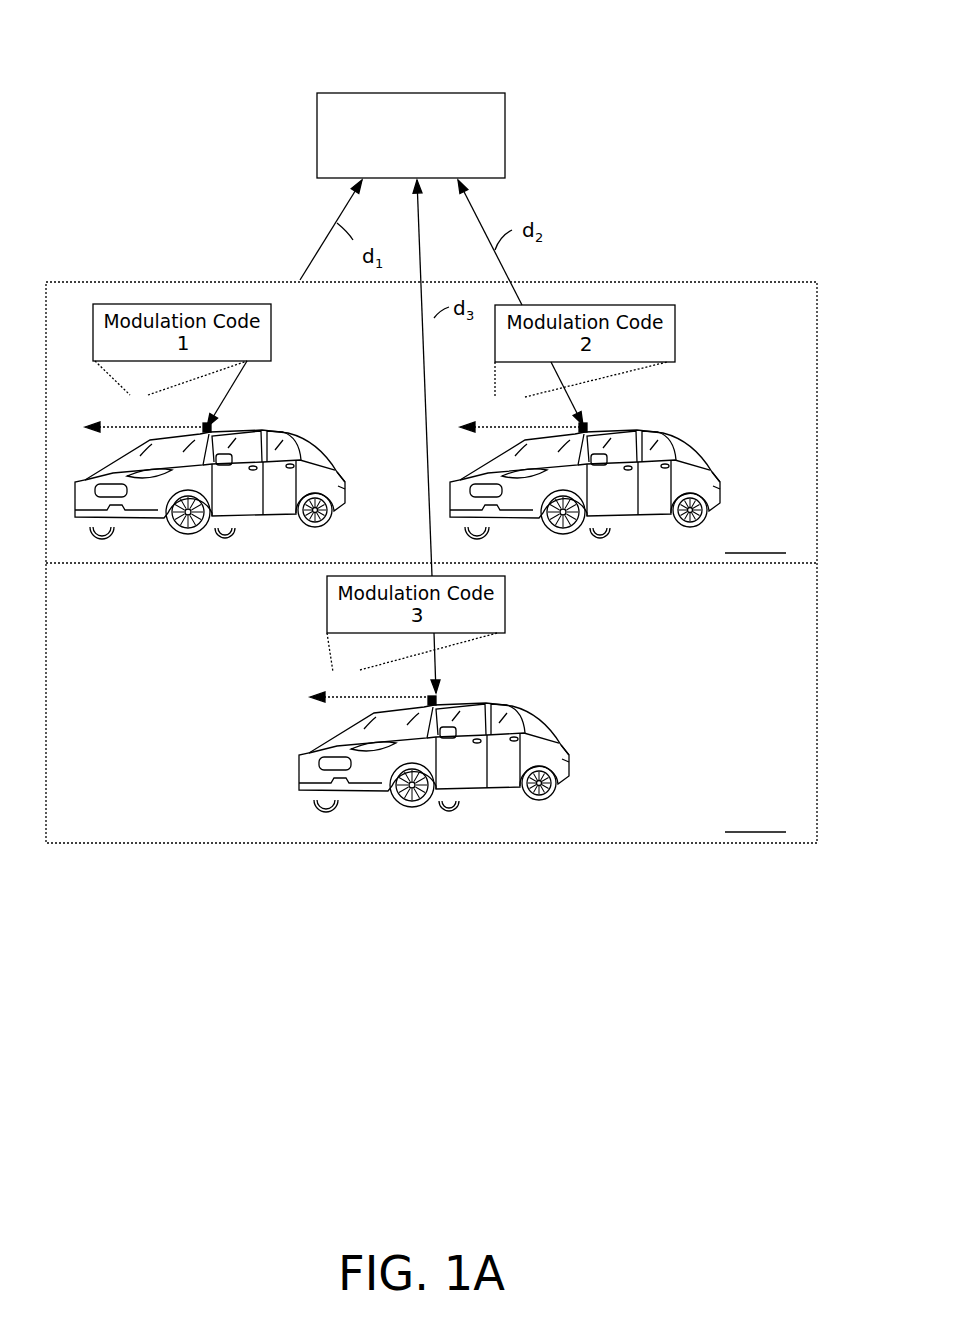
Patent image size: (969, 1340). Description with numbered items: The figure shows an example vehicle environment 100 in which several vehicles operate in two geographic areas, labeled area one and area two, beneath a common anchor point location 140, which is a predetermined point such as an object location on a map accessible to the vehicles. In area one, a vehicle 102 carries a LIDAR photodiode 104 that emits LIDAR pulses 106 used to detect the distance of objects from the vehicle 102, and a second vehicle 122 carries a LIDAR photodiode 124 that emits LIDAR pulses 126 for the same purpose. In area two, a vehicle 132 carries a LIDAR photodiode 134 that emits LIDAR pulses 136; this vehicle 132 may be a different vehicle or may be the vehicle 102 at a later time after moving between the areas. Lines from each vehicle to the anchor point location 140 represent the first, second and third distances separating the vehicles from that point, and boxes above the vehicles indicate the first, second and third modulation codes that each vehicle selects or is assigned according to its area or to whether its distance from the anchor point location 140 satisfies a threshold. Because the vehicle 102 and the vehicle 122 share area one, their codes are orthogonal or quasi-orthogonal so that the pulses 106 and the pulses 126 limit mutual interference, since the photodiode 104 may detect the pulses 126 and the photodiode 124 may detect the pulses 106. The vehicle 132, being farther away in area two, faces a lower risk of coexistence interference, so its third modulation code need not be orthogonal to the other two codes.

The vehicle environment 100 is at (803, 18).
The anchor point location 140 is at (410, 93).
The vehicle 102 is at (320, 458).
The LIDAR photodiode 104 is at (210, 427).
The LIDAR pulses 106 is at (168, 427).
The vehicle 122 is at (695, 457).
The LIDAR photodiode 124 is at (608, 425).
The LIDAR pulses 126 is at (543, 423).
The vehicle 132 is at (543, 730).
The LIDAR photodiode 134 is at (455, 702).
The LIDAR pulses 136 is at (385, 696).